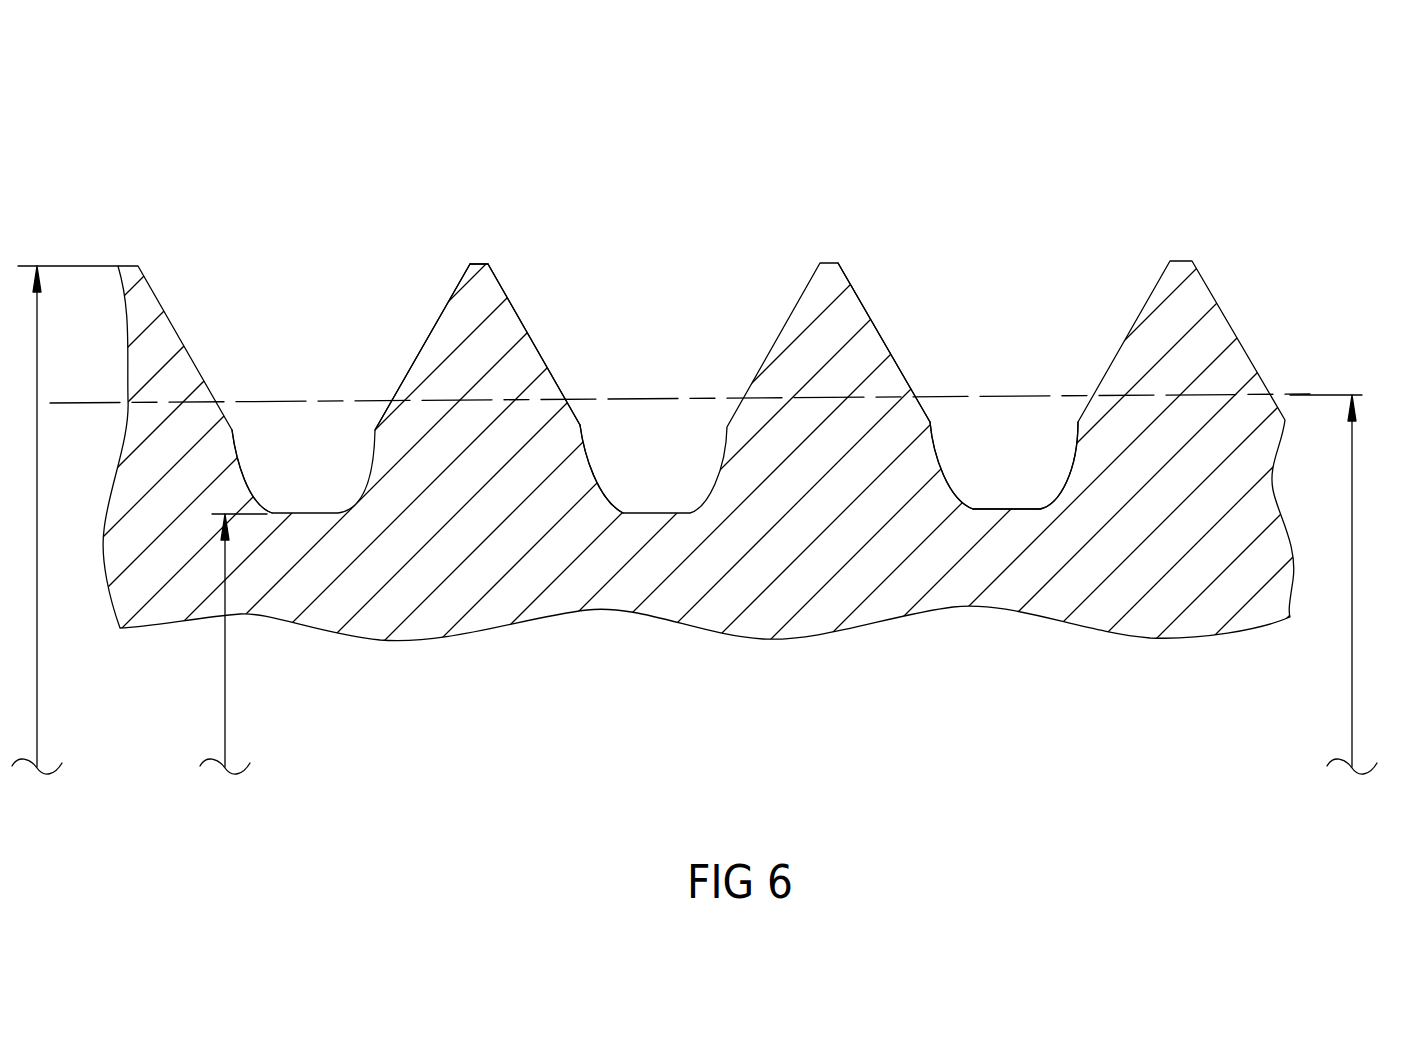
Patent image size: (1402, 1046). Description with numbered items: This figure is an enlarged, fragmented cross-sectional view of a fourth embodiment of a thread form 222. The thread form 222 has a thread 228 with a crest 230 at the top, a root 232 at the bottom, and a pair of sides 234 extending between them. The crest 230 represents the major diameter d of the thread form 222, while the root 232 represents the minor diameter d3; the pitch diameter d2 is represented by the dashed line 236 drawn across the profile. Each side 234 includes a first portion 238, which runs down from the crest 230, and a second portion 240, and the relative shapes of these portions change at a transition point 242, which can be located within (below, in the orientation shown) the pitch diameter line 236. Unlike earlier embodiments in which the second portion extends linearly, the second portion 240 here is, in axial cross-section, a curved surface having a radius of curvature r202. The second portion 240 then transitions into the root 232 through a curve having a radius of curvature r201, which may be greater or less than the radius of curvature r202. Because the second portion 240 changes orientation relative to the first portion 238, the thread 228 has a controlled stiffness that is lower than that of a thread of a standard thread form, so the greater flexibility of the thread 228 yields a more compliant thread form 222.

The thread form 222 is at (195, 120).
The thread 228 is at (463, 310).
The crest 230 is at (477, 265).
The root 232 is at (1003, 509).
The side 234 is at (523, 323).
The line representing pitch diameter 236 is at (1307, 393).
The first portion 238 is at (862, 293).
The second portion 240 is at (942, 466).
The transition point 242 is at (600, 403).
The radius of curvature r201 is at (977, 503).
The radius of curvature r202 is at (248, 478).
The major diameter d is at (63, 520).
The pitch diameter d2 is at (1339, 584).
The minor diameter d3 is at (231, 644).